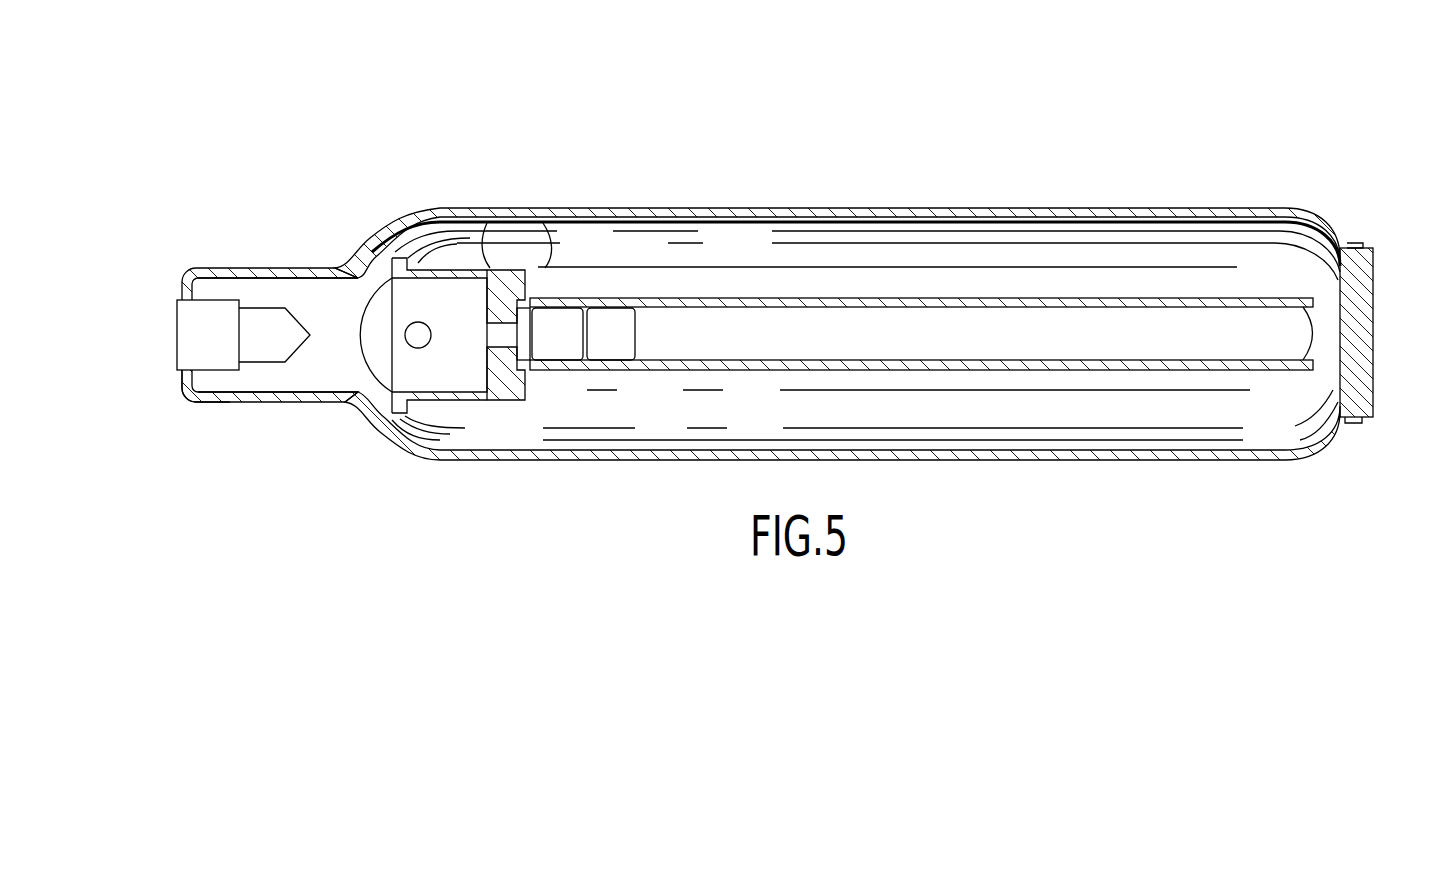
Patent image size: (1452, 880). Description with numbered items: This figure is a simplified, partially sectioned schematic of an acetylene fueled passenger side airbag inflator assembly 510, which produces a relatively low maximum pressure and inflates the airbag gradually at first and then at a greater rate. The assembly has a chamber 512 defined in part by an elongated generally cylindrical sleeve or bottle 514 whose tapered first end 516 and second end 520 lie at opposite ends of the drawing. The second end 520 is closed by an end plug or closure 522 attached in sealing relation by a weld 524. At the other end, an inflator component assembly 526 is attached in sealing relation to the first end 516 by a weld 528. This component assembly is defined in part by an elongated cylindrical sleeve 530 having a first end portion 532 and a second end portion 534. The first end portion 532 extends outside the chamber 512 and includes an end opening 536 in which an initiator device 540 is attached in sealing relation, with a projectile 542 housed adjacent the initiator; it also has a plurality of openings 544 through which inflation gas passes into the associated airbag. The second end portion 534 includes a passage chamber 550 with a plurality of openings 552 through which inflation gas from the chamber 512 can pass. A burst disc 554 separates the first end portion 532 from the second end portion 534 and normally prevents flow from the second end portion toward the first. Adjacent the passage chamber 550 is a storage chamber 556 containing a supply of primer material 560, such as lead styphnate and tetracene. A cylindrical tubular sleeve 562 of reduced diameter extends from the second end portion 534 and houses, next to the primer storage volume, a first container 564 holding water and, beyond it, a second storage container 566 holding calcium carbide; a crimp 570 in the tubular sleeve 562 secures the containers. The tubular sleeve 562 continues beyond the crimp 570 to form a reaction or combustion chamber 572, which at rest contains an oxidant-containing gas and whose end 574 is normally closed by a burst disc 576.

The inflator assembly 510 is at (852, 132).
The chamber 512 is at (930, 243).
The sleeve or bottle 514 is at (1060, 215).
The first end 516 is at (383, 205).
The second end 520 is at (1335, 212).
The end plug or closure 522 is at (1363, 307).
The weld 524 is at (1350, 420).
The inflator component assembly 526 is at (330, 254).
The weld 528 is at (362, 428).
The sleeve 530 is at (515, 268).
The first end portion 532 is at (208, 250).
The second end portion 534 is at (530, 298).
The end opening 536 is at (180, 372).
The initiator device 540 is at (188, 330).
The projectile 542 is at (262, 343).
The openings 544 is at (257, 272).
The passage chamber 550 is at (462, 400).
The openings 552 is at (426, 323).
The burst disc 554 is at (358, 325).
The storage chamber 556 is at (517, 400).
The primer material 560 is at (507, 345).
The tubular sleeve 562 is at (700, 298).
The first container 564 is at (560, 300).
The second storage container 566 is at (610, 300).
The crimp 570 is at (636, 372).
The reaction or combustion chamber 572 is at (753, 350).
The end 574 is at (1315, 382).
The burst disc 576 is at (1318, 332).